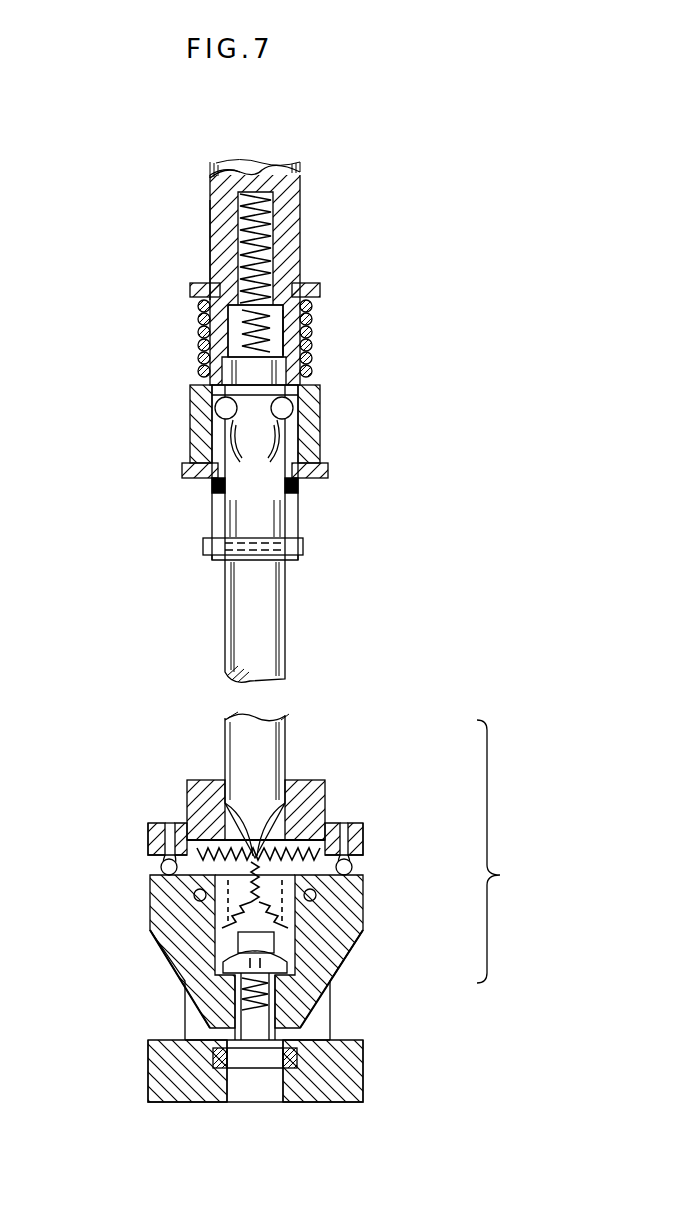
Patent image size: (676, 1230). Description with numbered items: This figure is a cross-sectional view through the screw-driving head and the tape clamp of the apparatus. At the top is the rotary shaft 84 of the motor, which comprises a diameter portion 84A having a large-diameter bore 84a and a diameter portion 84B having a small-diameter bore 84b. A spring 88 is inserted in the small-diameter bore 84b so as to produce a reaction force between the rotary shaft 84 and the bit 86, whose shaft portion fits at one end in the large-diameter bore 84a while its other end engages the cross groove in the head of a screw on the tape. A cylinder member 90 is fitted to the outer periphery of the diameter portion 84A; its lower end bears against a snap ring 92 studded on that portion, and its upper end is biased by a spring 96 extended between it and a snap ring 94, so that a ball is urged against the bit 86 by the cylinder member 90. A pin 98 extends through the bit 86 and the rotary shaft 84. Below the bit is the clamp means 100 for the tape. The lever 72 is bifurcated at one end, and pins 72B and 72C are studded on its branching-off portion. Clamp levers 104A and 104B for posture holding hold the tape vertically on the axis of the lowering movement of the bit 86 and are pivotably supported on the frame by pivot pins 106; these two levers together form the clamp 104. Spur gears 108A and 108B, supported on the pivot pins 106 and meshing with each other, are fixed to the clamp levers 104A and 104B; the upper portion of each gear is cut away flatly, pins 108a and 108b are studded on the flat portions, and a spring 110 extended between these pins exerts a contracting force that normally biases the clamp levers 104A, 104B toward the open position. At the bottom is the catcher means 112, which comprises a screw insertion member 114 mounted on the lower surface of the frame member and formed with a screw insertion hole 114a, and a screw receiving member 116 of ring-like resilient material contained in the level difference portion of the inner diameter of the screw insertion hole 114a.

The rotary shaft 84 is at (287, 213).
The small-diameter bore 84b is at (216, 192).
The diameter portion 84B is at (218, 218).
The spring 88 is at (272, 232).
The large-diameter bore 84a is at (232, 328).
The diameter portion 84A is at (292, 342).
The snap ring 94 is at (192, 288).
The spring 96 is at (200, 352).
The cylinder member 90 is at (190, 430).
The snap ring 92 is at (190, 478).
The pin 98 is at (303, 548).
The bit 86 is at (275, 647).
The spring 110 is at (215, 815).
The pin 108a is at (184, 835).
The pin 108b is at (325, 812).
The pin 72C is at (162, 830).
The pin 72B is at (358, 840).
The lever 72 is at (148, 835).
The pivot pins 106 is at (195, 895).
The clamp means 100 is at (522, 851).
The clamp lever 104A is at (158, 910).
The clamp lever 104B is at (345, 930).
The chuck body 104 is at (257, 951).
The spur gear 108A is at (170, 945).
The spur gear 108B is at (340, 962).
The catcher means 112 is at (370, 1108).
The screw insertion member 114 is at (176, 1104).
The screw insertion hole 114a is at (253, 1104).
The screw receiving member 116 is at (286, 1068).